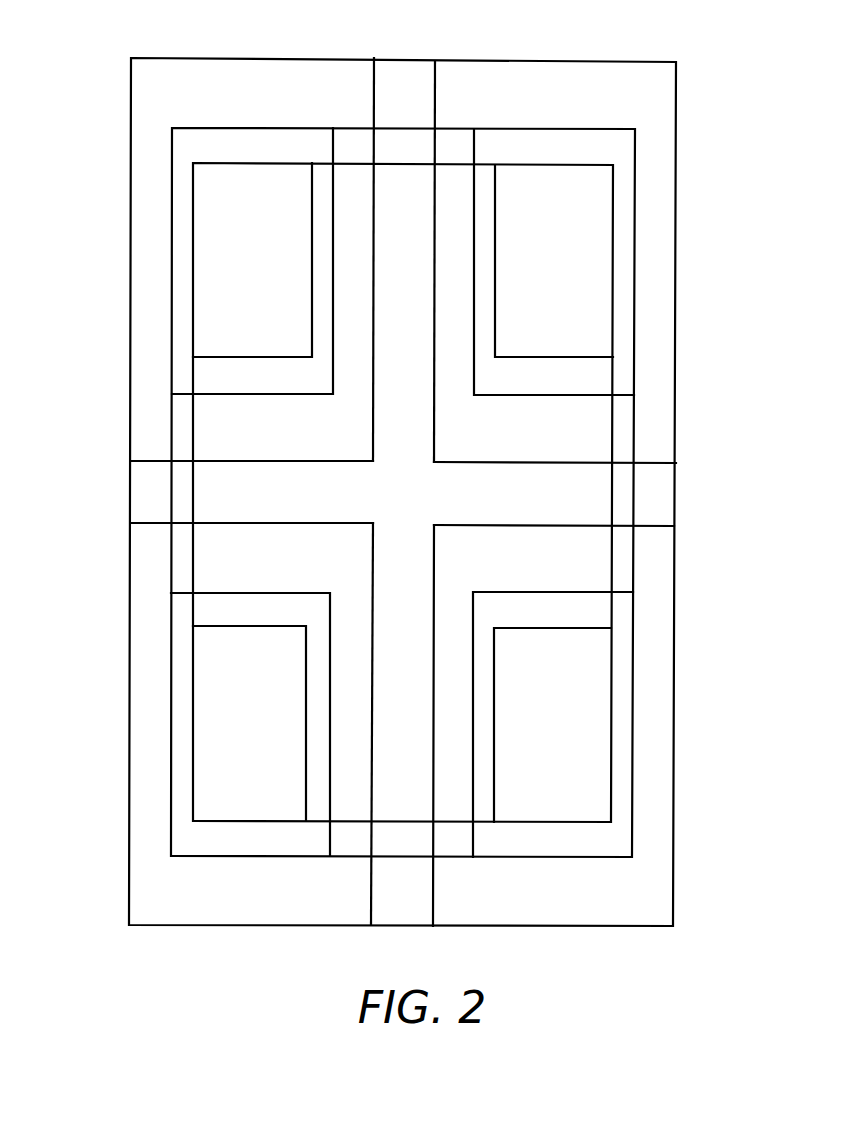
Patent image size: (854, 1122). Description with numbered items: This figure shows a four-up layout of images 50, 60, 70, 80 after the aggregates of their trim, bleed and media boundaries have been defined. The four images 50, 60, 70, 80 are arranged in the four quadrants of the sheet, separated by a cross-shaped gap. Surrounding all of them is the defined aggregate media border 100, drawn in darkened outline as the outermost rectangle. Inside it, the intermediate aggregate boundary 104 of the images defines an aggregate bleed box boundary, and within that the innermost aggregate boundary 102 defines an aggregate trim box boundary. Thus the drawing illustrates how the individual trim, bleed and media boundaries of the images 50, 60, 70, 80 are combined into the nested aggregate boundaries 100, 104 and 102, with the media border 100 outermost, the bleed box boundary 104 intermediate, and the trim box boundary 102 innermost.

The aggregate media border 100 is at (468, 60).
The aggregate trim box boundary 102 is at (584, 166).
The aggregate bleed box boundary 104 is at (293, 127).
The image 50 is at (114, 218).
The image 60 is at (694, 221).
The image 70 is at (691, 748).
The image 80 is at (111, 743).